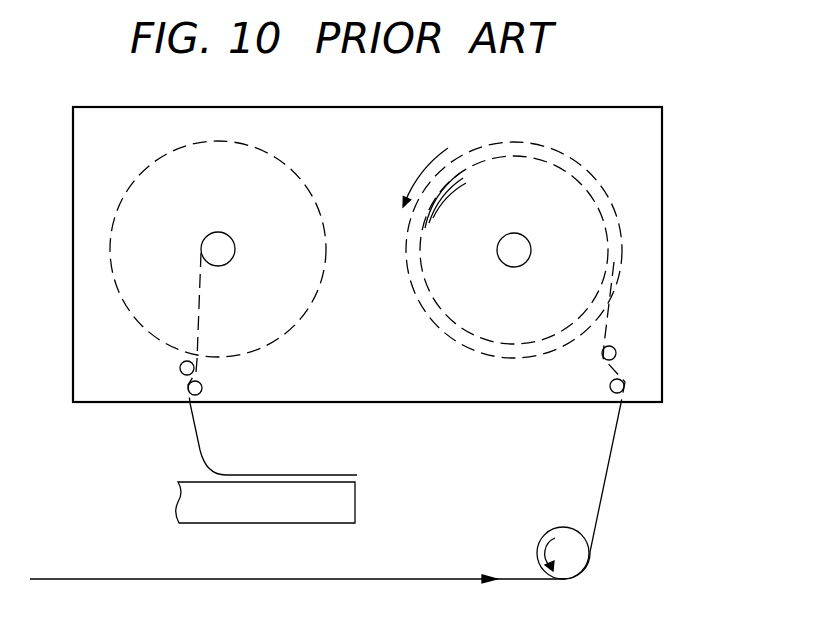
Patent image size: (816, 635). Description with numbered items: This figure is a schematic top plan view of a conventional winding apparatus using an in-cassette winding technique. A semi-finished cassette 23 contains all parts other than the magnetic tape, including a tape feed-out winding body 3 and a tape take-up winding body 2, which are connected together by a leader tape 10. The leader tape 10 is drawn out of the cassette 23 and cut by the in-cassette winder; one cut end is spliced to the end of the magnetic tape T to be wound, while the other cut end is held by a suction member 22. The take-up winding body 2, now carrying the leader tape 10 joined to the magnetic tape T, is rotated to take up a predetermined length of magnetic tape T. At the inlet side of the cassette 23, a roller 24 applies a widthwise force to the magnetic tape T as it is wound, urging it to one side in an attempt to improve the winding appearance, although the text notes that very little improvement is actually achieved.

The tape take-up winding body 2 is at (582, 168).
The tape feed-out winding body 3 is at (299, 173).
The leader tape 10 is at (200, 439).
The suction member 22 is at (357, 507).
The cassette 23 is at (643, 108).
The roller 24 is at (538, 547).
The magnetic tape T is at (610, 460).